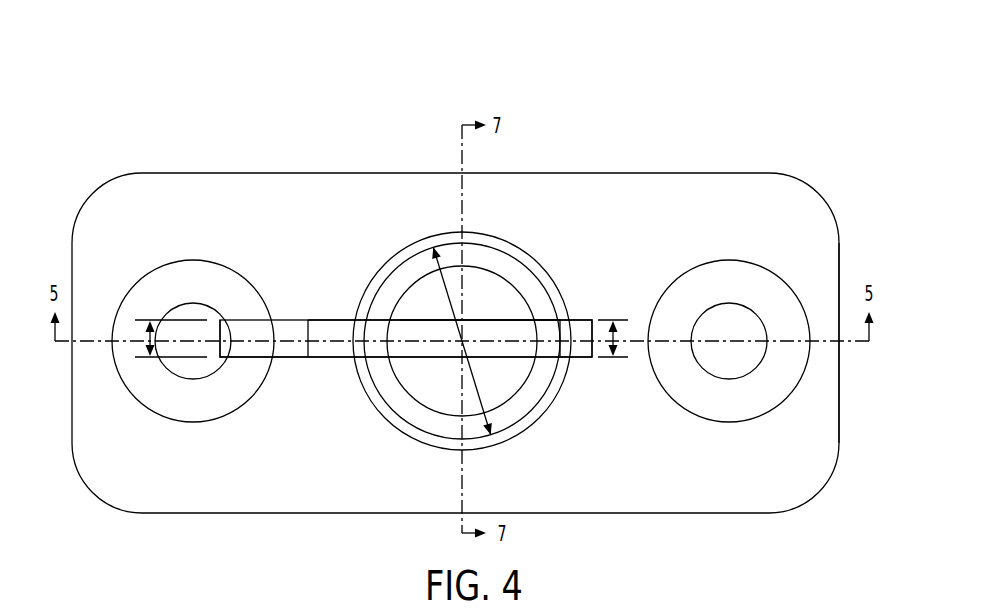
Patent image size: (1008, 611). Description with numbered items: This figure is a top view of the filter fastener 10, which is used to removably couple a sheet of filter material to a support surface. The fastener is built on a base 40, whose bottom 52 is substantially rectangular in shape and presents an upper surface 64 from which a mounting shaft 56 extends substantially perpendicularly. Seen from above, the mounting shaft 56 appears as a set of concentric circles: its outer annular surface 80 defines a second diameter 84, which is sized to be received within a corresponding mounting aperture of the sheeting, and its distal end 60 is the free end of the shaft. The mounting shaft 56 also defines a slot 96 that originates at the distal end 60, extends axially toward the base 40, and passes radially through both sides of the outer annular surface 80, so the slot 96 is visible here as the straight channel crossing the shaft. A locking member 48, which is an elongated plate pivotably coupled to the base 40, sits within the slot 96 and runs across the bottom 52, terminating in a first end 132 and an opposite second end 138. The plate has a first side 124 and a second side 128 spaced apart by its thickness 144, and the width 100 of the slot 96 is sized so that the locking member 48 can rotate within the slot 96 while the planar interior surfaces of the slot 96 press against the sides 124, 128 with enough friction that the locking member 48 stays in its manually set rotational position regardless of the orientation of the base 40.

The filter fastener 10 is at (622, 62).
The base 40 is at (568, 183).
The bottom 52 is at (826, 233).
The thickness 144 is at (147, 345).
The upper surface 64 is at (663, 472).
The outer annular surface 80 is at (549, 258).
The mounting shaft 56 is at (497, 266).
The distal end 60 is at (430, 294).
The second diameter 84 is at (484, 412).
The locking member 48 is at (290, 319).
The first end 132 is at (222, 345).
The second end 138 is at (577, 333).
The width 100 is at (617, 341).
The second side 128 is at (334, 312).
The first side 124 is at (336, 366).
The slot 96 is at (479, 328).